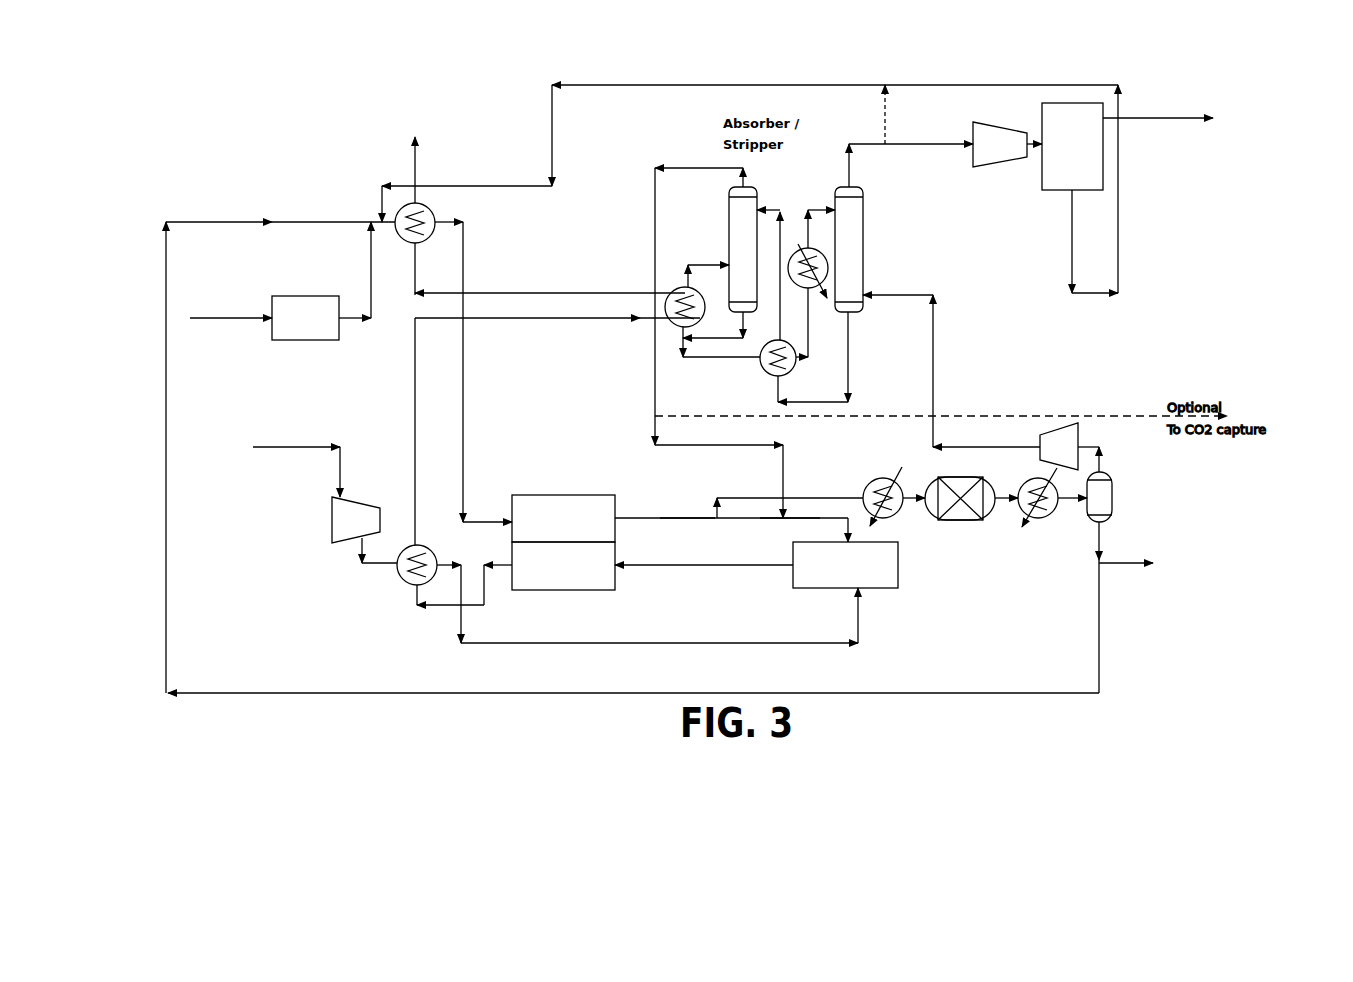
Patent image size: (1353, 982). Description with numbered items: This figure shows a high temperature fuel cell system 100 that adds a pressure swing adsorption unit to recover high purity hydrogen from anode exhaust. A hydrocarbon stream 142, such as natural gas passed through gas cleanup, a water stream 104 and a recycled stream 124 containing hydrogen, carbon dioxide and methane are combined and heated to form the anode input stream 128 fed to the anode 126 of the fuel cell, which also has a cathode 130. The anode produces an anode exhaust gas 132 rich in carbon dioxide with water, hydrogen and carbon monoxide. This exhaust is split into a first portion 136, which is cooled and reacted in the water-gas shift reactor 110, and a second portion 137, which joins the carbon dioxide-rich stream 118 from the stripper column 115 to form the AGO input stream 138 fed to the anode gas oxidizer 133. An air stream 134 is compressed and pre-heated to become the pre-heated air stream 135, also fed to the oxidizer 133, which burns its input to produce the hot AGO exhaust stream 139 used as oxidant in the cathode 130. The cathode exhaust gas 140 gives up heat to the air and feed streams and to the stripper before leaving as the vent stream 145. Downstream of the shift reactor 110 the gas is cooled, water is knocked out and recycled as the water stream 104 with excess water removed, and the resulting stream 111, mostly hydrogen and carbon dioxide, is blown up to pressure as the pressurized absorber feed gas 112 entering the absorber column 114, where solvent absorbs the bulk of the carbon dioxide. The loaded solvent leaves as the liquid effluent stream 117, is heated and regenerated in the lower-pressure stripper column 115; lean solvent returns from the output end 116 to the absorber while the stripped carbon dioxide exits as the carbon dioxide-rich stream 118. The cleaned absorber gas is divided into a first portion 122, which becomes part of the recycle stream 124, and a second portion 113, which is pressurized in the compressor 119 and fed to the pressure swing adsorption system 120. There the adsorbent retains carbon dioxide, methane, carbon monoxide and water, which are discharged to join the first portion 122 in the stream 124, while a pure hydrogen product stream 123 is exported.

The high temperature fuel cell system 100 is at (537, 48).
The water stream 104 is at (670, 445).
The shift reactor 110 is at (974, 517).
The stream 111 is at (1094, 446).
The pressurized absorber feed gas 112 is at (951, 355).
The second portion 113 is at (1119, 484).
The absorber column 114 is at (842, 273).
The stripper column 115 is at (717, 254).
The output end 116 is at (911, 130).
The liquid effluent stream 117 is at (781, 311).
The carbon dioxide-rich stream 118 is at (684, 328).
The compressor 119 is at (994, 126).
The pressure swing adsorption system 120 is at (1085, 100).
The first portion 122 is at (883, 112).
The pure hydrogen product stream 123 is at (1158, 102).
The stream including hydrogen, carbon dioxide, and methane 124 is at (750, 198).
The anode 126 is at (608, 492).
The anode input stream 128 is at (473, 372).
The cathode 130 is at (590, 588).
The anode exhaust gas 132 is at (731, 516).
The anode gas oxidizer 133 is at (869, 577).
The air stream 134 is at (325, 494).
The pre-heated air stream 135 is at (659, 604).
The first portion 136 is at (789, 493).
The second portion 137 is at (737, 520).
The AGO input stream 138 is at (803, 520).
The AGO exhaust stream 139 is at (704, 581).
The cathode exhaust gas 140 is at (454, 593).
The hydrocarbon stream 142 is at (280, 286).
The vent stream 145 is at (547, 324).